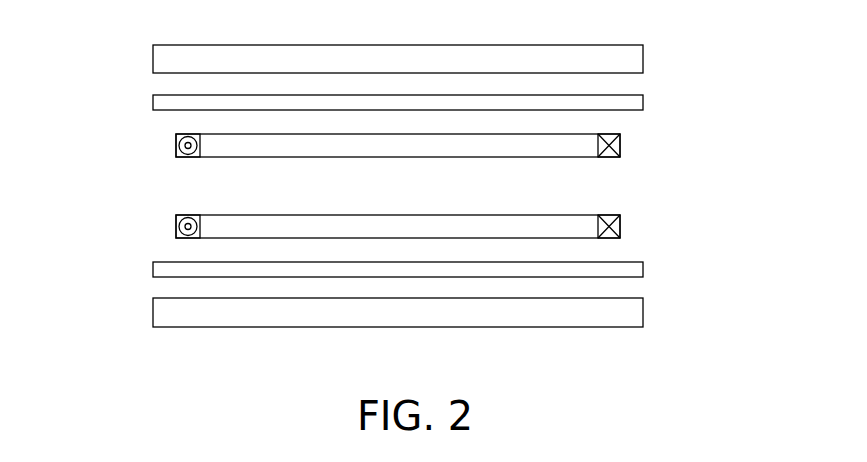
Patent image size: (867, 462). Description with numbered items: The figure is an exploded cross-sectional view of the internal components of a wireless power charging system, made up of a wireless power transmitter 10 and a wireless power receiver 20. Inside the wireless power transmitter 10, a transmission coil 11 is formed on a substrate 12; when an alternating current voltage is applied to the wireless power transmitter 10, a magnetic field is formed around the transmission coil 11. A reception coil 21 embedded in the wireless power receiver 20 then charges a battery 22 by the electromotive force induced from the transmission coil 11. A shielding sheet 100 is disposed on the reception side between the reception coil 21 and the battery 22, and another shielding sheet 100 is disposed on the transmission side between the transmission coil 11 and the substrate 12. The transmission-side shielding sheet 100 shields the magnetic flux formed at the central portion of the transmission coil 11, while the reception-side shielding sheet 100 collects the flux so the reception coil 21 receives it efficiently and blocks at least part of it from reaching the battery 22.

The wireless power transmitter 10 is at (718, 230).
The transmission coil 11 is at (620, 232).
The substrate 12 is at (643, 314).
The wireless power receiver 20 is at (718, 55).
The reception coil 21 is at (620, 139).
The battery 22 is at (643, 55).
The shielding sheet 100 is at (155, 101).